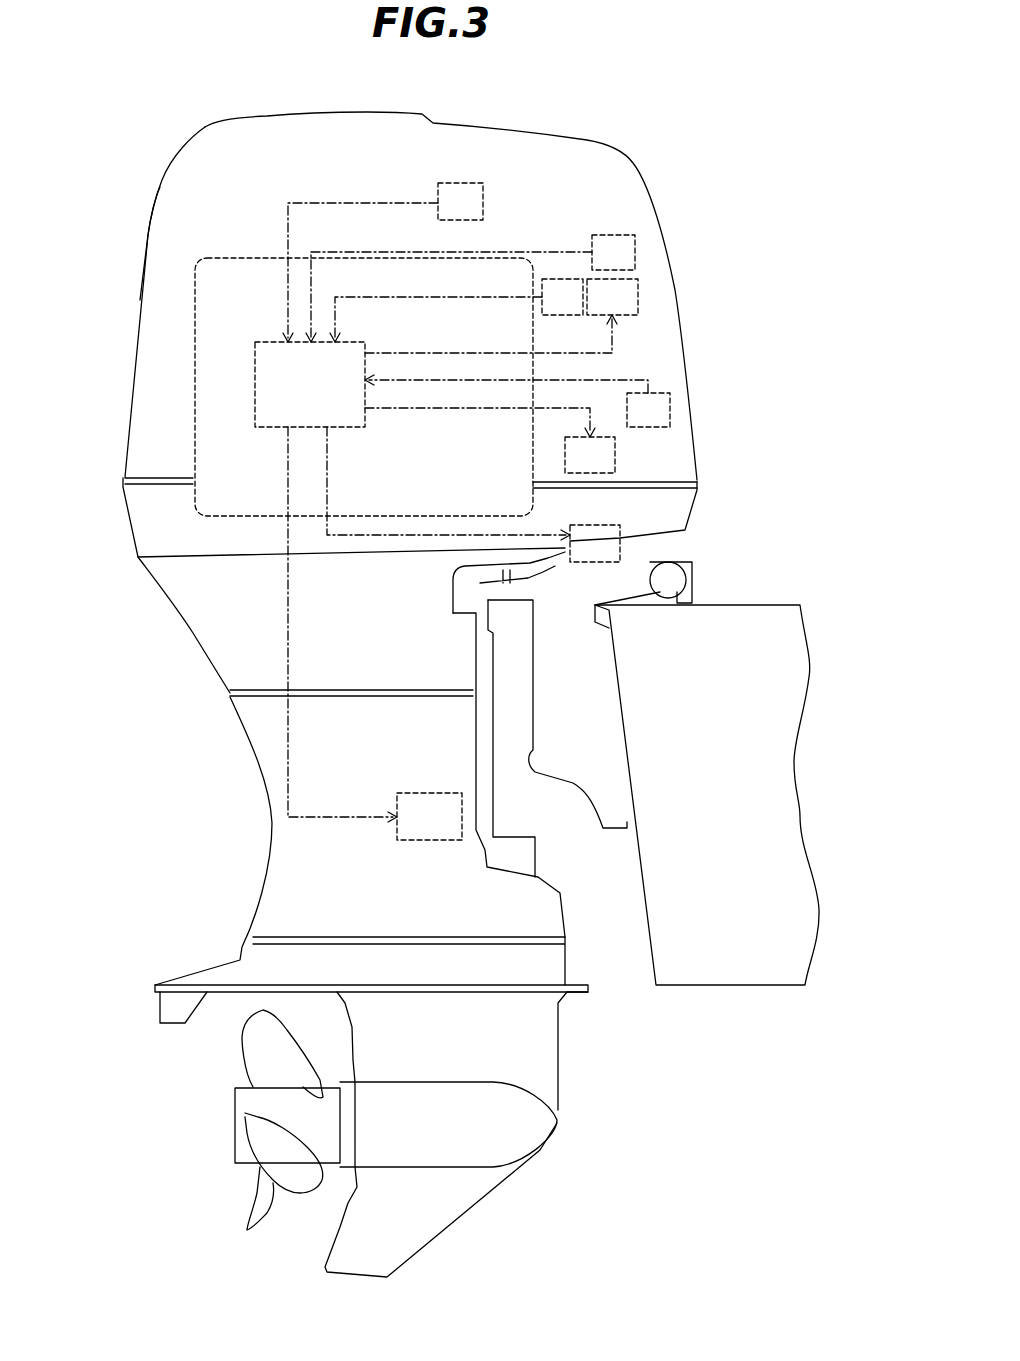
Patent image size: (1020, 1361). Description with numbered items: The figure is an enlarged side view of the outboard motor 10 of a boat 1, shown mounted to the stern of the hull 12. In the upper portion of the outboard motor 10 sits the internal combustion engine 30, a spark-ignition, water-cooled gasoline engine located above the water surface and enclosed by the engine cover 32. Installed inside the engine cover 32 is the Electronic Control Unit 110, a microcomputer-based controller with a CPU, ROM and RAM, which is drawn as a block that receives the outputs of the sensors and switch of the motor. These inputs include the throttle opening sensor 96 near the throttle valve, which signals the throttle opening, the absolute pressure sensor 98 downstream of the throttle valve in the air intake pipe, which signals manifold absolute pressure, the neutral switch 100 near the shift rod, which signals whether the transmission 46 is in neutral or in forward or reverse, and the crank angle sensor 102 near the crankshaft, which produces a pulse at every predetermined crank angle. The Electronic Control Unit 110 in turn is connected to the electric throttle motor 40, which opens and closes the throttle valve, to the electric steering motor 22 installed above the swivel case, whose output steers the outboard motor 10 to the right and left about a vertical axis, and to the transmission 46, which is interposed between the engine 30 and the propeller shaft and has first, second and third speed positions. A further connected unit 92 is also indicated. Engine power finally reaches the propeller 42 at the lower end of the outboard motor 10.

The boat 1 is at (745, 300).
The outboard motor 10 is at (638, 162).
The hull 12 is at (698, 990).
The electric steering motor 22 is at (595, 543).
The internal combustion engine 30 is at (193, 303).
The engine cover 32 is at (152, 220).
The electric throttle motor 40 is at (612, 297).
The propeller 42 is at (250, 1197).
The transmission 46 is at (429, 816).
The throttle actuator 92 is at (590, 455).
The throttle opening sensor 96 is at (607, 235).
The absolute pressure sensor 98 is at (558, 315).
The neutral switch 100 is at (670, 408).
The crank angle sensor 102 is at (483, 197).
The Electronic Control Unit 110 is at (255, 375).